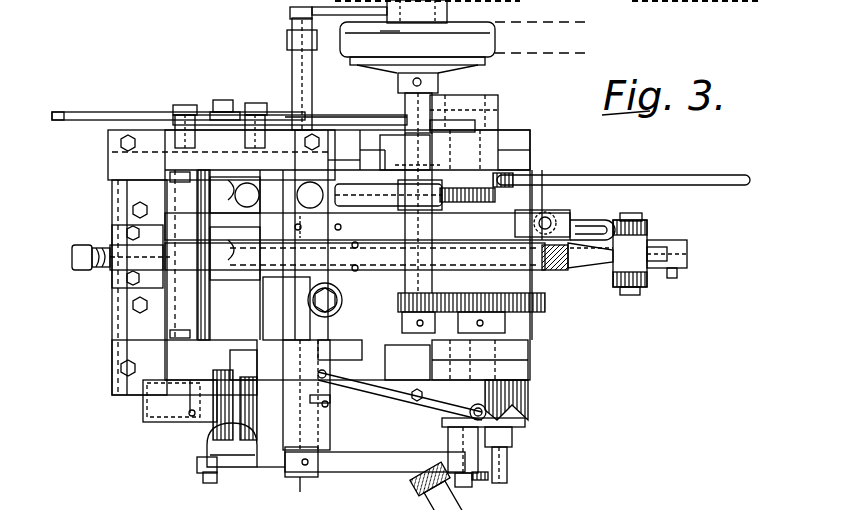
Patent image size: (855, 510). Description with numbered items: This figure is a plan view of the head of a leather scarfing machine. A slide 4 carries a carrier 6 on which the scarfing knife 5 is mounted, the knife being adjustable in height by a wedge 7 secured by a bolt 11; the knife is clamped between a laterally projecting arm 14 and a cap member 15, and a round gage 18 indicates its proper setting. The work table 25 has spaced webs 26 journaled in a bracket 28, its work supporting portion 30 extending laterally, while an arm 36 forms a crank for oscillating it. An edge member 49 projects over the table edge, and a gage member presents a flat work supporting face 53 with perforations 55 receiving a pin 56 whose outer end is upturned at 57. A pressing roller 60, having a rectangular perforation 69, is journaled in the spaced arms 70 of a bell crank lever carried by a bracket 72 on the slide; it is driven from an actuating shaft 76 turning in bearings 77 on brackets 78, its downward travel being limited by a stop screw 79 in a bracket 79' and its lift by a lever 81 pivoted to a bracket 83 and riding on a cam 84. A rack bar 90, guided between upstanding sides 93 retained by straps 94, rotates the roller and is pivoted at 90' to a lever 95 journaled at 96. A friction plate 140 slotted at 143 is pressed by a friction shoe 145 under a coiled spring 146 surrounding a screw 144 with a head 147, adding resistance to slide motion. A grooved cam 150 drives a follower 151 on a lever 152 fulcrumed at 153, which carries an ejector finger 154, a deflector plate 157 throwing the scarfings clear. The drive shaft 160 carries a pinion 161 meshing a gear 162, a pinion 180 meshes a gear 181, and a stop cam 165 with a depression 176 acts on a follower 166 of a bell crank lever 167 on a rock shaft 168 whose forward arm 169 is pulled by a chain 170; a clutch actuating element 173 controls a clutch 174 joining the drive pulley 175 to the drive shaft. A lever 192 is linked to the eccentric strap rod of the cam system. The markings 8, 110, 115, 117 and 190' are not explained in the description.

The slide 4 is at (123, 313).
The scarfing knife 5 is at (297, 443).
The carrier 6 is at (327, 306).
The wedge 7 is at (75, 253).
The section line 8 is at (200, 400).
The bolt 11 is at (343, 282).
The arm 14 is at (318, 401).
The cap member 15 is at (318, 492).
The gage 18 is at (320, 406).
The work table 25 is at (184, 367).
The projecting webs 26 is at (167, 193).
The bracket 28 is at (205, 150).
The work supporting portion 30 is at (218, 410).
The arm 36 is at (320, 120).
The edge member 49 is at (217, 447).
The work supporting face 53 is at (147, 408).
The perforations 55 is at (183, 105).
The pin 56 is at (190, 380).
The upturned end 57 is at (192, 416).
The roller 60 is at (240, 373).
The rectangular perforation 69 is at (235, 468).
The arms 70 is at (233, 241).
The bracket 72 is at (482, 470).
The actuating shaft 76 is at (488, 98).
The bearings 77 is at (498, 148).
The brackets 78 is at (385, 140).
The stop screw 79 is at (121, 246).
The bracket 79' is at (121, 275).
The lever 81 is at (396, 195).
The bracket 83 is at (344, 165).
The cam 84 is at (500, 167).
The rack bar 90 is at (389, 245).
The pivot 90' is at (682, 270).
The upstanding sides 93 is at (298, 278).
The straps 94 is at (268, 244).
The lever 95 is at (653, 270).
The pivot 96 is at (632, 290).
The rod end 110 is at (578, 258).
The block 115 is at (450, 108).
The bar 117 is at (97, 117).
The friction plate 140 is at (450, 232).
The slot 143 is at (600, 228).
The screw 144 is at (578, 221).
The friction shoe 145 is at (557, 213).
The coiled spring 146 is at (484, 503).
The head 147 is at (430, 500).
The grooved edge cam 150 is at (528, 392).
The cam follower 151 is at (515, 426).
The lever 152 is at (440, 404).
The fulcrum 153 is at (410, 402).
The ejector finger 154 is at (340, 350).
The deflector plate 157 is at (213, 473).
The shaft 160 is at (412, 97).
The pinion 161 is at (438, 291).
The gear 162 is at (560, 298).
The stop cam 165 is at (497, 436).
The follower 166 is at (462, 438).
The bell crank lever 167 is at (375, 462).
The rock shaft 168 is at (308, 444).
The forward arm 169 is at (277, 470).
The chain 170 is at (212, 480).
The clutch actuating element 173 is at (290, 22).
The clutch 174 is at (447, 12).
The drive pulley 175 is at (482, 31).
The depression 176 is at (505, 462).
The pinion 180 is at (510, 198).
The gear 181 is at (362, 230).
The rod 190' is at (621, 169).
The lever 192 is at (417, 156).